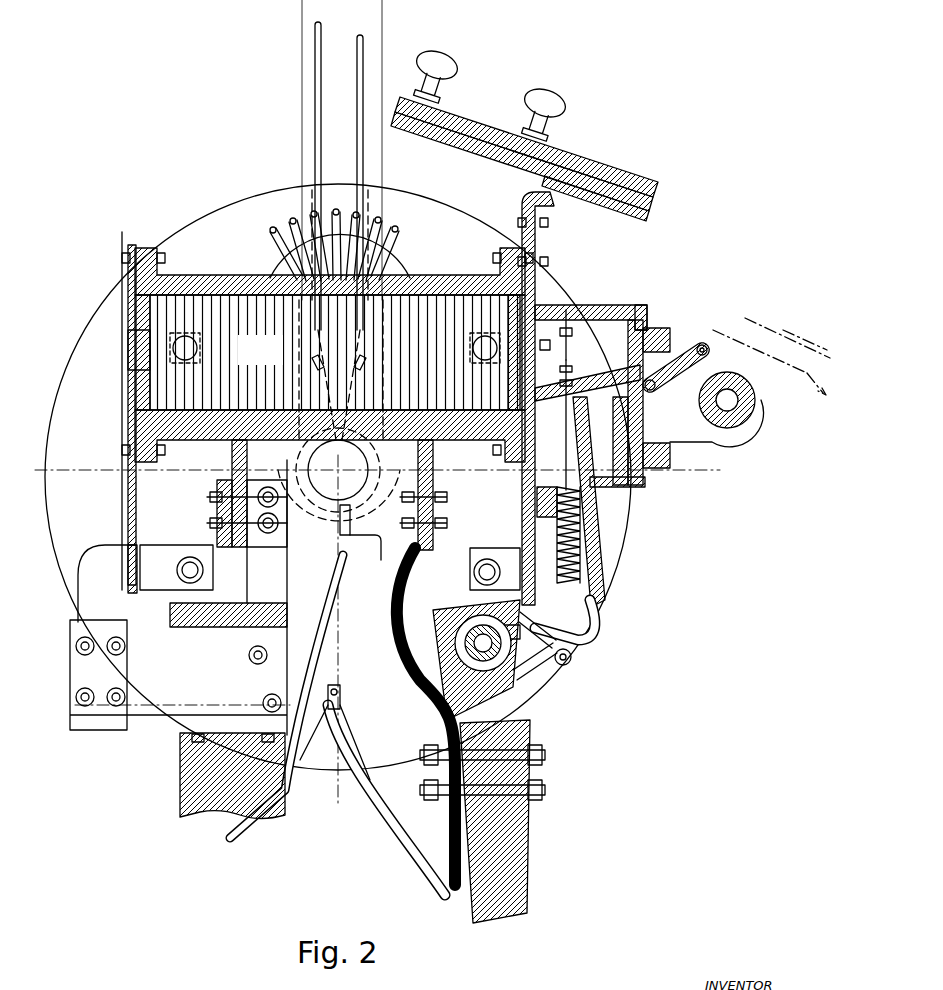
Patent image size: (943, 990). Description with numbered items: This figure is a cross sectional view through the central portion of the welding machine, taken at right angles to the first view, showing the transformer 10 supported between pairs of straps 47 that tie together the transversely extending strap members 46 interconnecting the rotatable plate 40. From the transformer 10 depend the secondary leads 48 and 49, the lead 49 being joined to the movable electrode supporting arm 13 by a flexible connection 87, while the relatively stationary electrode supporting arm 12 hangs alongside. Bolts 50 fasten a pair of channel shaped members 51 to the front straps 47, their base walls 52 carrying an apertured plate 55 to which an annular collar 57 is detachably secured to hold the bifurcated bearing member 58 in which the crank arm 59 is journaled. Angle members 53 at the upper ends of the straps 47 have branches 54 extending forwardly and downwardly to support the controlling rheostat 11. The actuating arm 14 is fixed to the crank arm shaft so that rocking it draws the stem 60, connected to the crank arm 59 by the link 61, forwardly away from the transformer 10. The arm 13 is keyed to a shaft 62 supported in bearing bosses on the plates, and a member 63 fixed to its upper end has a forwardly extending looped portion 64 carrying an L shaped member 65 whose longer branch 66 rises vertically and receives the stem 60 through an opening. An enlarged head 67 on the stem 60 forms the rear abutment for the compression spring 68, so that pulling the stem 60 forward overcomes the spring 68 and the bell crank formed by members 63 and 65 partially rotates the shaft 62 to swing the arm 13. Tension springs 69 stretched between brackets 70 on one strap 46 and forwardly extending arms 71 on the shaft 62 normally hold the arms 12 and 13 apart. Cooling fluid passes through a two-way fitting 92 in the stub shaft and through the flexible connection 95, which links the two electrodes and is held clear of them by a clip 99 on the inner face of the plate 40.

The transformer 10 is at (327, 355).
The controlling rheostat 11 is at (618, 185).
The electrode supporting arm 12 is at (180, 796).
The electrode supporting arm 13 is at (528, 833).
The actuating arm 14 is at (793, 380).
The plate 40 is at (212, 236).
The strap member 46 is at (150, 345).
The strap 47 is at (128, 313).
The secondary lead 48 is at (228, 460).
The secondary lead 49 is at (440, 460).
The bolt 50 is at (546, 512).
The channel shaped member 51 is at (612, 308).
The base wall 52 is at (545, 254).
The angle member 53 is at (548, 206).
The branch 54 is at (598, 212).
The apertured plate 55 is at (650, 314).
The annular collar 57 is at (668, 332).
The bifurcated bearing member 58 is at (722, 428).
The crank arm 59 is at (715, 350).
The stem 60 is at (600, 408).
The link 61 is at (667, 385).
The shaft 62 is at (470, 650).
The member 63 is at (500, 615).
The looped portion 64 is at (596, 628).
The L shaped member 65 is at (597, 530).
The longer branch 66 is at (590, 460).
The enlarged head 67 is at (558, 410).
The compression spring 68 is at (560, 430).
The tension spring 69 is at (578, 560).
The bracket 70 is at (583, 322).
The forwardly extending arm 71 is at (549, 678).
The flexible connection 87 is at (360, 625).
The two-way fitting 92 is at (340, 522).
The flexible connection 95 is at (390, 795).
The clip 99 is at (333, 712).